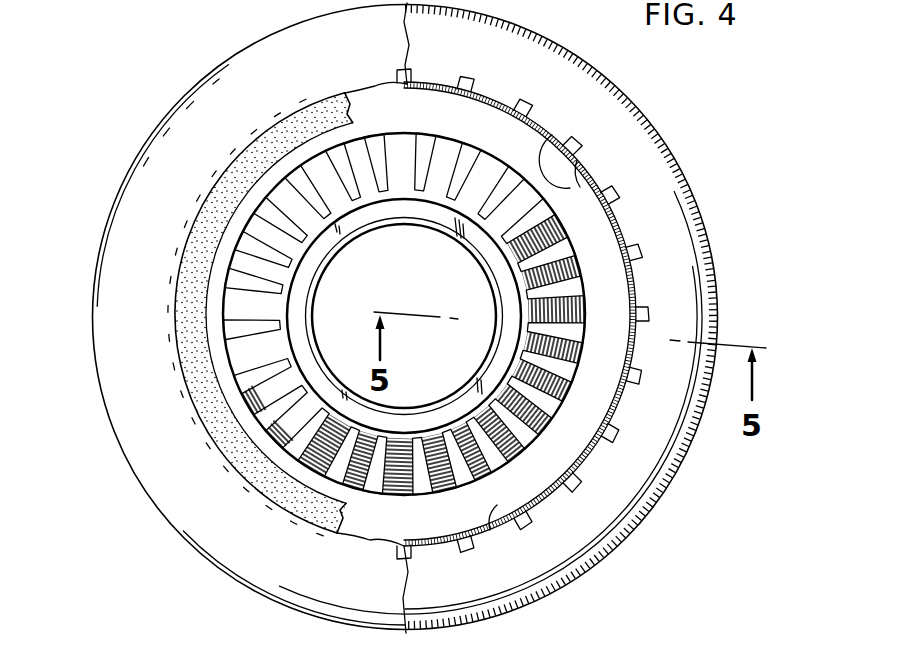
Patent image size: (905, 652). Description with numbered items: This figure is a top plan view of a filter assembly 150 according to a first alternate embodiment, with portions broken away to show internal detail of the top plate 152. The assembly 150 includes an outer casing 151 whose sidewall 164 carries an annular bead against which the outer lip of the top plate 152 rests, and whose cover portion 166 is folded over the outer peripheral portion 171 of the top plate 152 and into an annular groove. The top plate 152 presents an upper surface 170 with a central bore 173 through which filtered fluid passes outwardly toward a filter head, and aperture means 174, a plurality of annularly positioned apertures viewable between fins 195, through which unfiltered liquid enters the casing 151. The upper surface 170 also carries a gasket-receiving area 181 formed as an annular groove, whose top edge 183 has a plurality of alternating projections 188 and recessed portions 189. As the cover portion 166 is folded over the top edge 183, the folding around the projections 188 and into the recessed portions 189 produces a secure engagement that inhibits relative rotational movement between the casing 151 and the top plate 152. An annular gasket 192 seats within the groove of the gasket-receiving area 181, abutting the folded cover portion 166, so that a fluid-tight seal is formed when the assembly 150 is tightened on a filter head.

The assembly 150 is at (704, 126).
The outer casing 151 is at (618, 558).
The top plate 152 is at (428, 417).
The sidewall 164 is at (678, 476).
The cover portion 166 is at (268, 570).
The upper surface 170 is at (508, 301).
The outer peripheral portion 171 is at (640, 504).
The central bore 173 is at (428, 289).
The aperture means 174 is at (461, 164).
The gasket-receiving area 181 is at (602, 299).
The top edge 183 is at (586, 442).
The projections 188 is at (572, 190).
The recessed portions 189 is at (617, 196).
The gasket 192 is at (237, 447).
The fins 195 is at (578, 324).